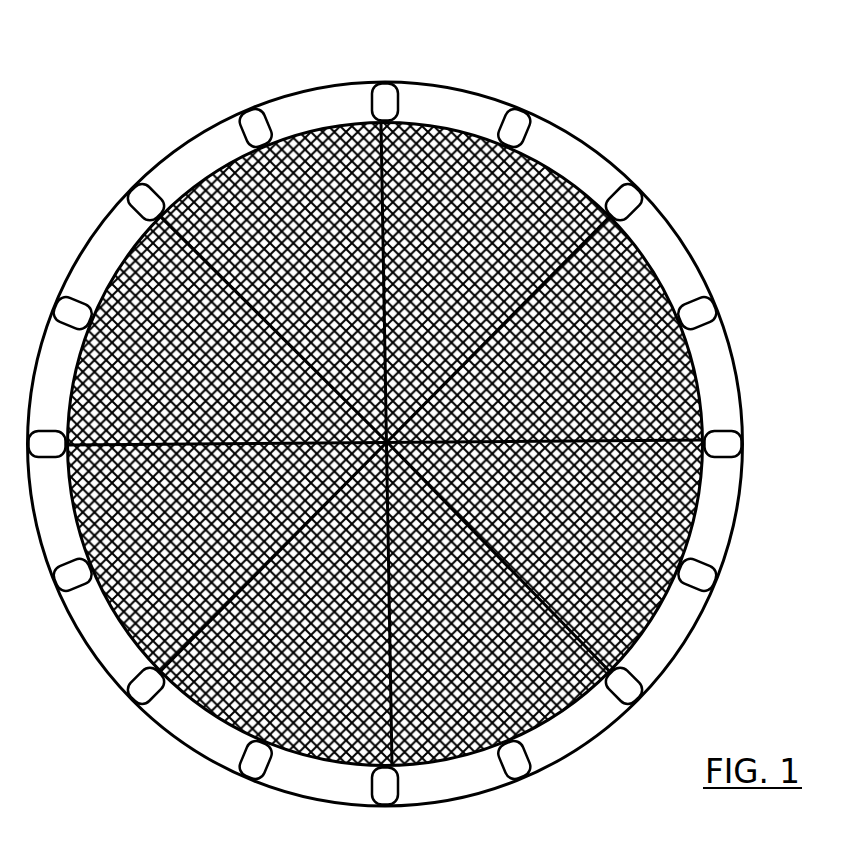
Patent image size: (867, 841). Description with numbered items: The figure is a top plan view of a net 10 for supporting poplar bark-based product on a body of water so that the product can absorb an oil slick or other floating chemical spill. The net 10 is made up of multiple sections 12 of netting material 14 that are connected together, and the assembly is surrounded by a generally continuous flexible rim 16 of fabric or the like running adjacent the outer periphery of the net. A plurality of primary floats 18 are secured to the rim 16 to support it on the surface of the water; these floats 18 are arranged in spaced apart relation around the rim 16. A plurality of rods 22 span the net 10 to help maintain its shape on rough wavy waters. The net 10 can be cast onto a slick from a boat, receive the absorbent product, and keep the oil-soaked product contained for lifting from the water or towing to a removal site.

The net 10 is at (418, 410).
The sections 12 is at (573, 185).
The netting material 14 is at (453, 167).
The flexible rim 16 is at (722, 382).
The primary floats 18 is at (625, 197).
The rods 22 is at (358, 152).